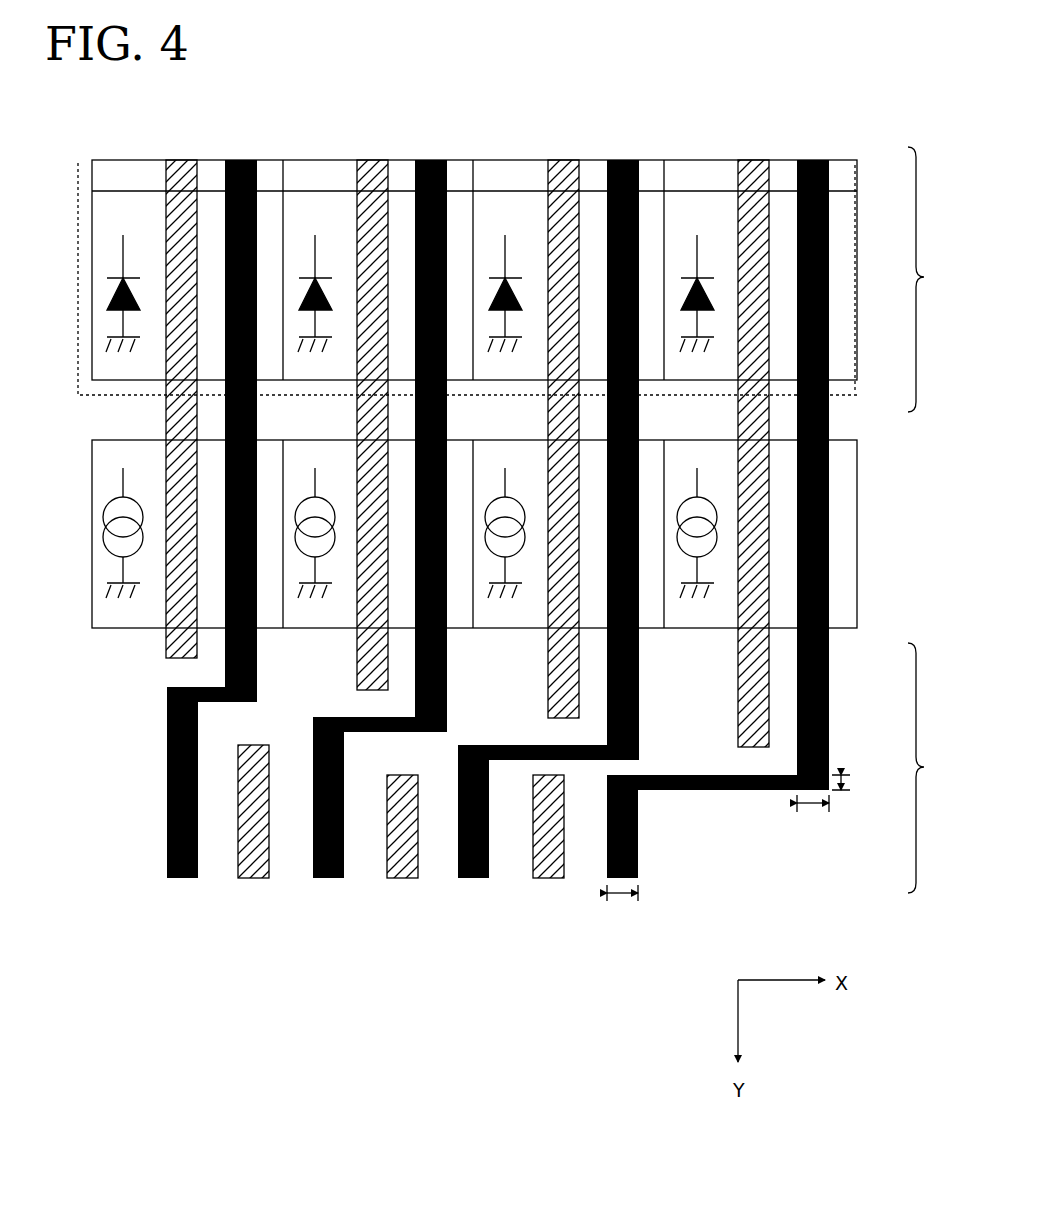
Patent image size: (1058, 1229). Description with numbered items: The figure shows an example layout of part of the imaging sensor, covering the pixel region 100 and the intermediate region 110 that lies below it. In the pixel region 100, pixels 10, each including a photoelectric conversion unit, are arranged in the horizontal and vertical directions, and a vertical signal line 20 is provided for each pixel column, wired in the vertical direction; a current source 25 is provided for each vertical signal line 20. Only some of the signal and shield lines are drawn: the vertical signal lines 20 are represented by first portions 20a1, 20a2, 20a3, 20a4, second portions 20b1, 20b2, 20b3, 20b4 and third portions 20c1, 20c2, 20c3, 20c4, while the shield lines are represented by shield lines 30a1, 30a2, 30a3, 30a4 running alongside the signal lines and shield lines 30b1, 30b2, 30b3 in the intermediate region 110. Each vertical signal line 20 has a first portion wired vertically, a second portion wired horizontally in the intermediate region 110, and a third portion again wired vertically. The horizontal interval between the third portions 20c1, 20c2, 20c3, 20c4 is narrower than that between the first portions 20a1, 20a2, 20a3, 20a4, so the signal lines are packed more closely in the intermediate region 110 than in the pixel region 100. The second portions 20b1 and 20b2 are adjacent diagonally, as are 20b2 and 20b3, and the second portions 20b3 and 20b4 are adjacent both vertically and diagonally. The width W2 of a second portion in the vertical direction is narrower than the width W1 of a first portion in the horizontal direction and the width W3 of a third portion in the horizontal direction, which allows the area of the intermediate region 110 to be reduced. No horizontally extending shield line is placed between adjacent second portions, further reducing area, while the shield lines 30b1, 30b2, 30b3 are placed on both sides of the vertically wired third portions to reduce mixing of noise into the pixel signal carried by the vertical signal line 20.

The pixel 10 is at (92, 276).
The current source 25 is at (92, 510).
The vertical signal line 20 is at (241, 160).
The shield line 30a1 is at (181, 160).
The shield line 30a2 is at (371, 160).
The shield line 30a3 is at (562, 160).
The shield line 30a4 is at (753, 160).
The shield line 30b1 is at (256, 878).
The shield line 30b2 is at (401, 878).
The shield line 30b3 is at (546, 878).
The first portion 20a1 is at (257, 645).
The first portion 20a2 is at (447, 647).
The first portion 20a3 is at (639, 647).
The first portion 20a4 is at (829, 647).
The second portion 20b1 is at (180, 687).
The second portion 20b2 is at (335, 717).
The second portion 20b3 is at (532, 745).
The second portion 20b4 is at (725, 775).
The third portion 20c1 is at (167, 766).
The third portion 20c2 is at (313, 766).
The third portion 20c3 is at (458, 790).
The third portion 20c4 is at (639, 825).
The pixel region 100 is at (937, 279).
The intermediate region 110 is at (937, 768).
The width of the first portion W1 is at (812, 821).
The width of the second portion W2 is at (860, 783).
The width of the third portion W3 is at (621, 907).